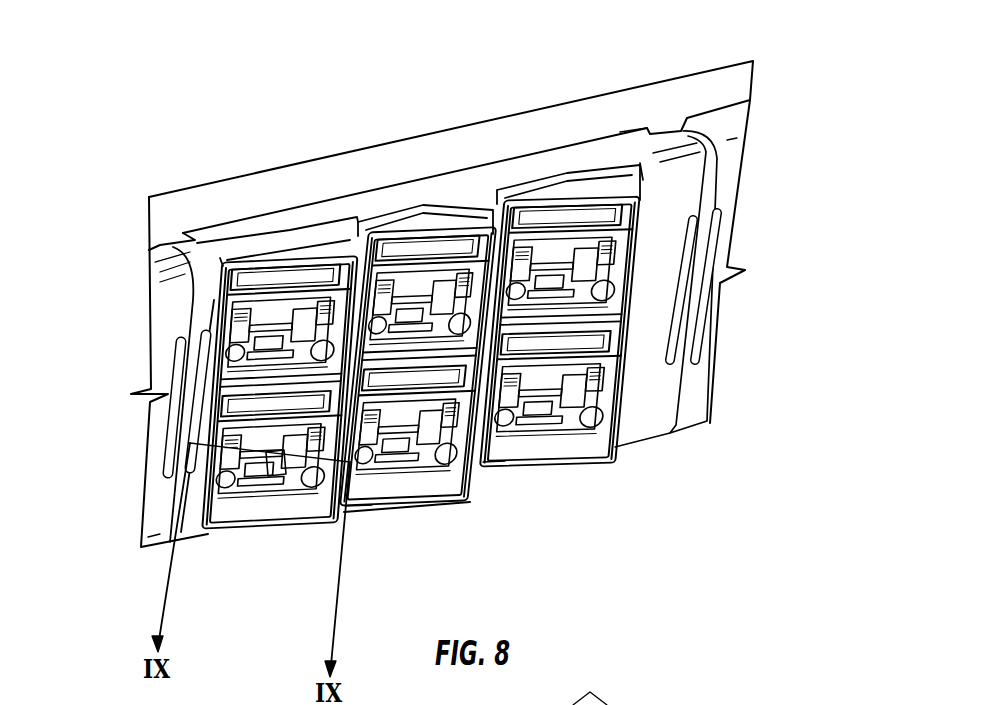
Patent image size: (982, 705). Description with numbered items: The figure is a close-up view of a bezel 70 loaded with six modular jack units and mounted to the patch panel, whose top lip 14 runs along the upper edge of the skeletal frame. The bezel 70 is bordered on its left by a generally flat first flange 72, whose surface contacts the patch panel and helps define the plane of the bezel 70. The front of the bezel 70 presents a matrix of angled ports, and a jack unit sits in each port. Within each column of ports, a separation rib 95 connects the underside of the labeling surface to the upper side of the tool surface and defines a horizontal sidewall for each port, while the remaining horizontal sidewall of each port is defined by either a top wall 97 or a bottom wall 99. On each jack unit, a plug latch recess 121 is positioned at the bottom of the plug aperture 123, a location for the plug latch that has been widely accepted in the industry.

The top lip 14 is at (360, 160).
The bezel 70 is at (477, 180).
The first flange 72 is at (633, 420).
The separation rib 95 is at (481, 468).
The top wall 97 is at (403, 200).
The bottom wall 99 is at (413, 503).
The plug latch recess 121 is at (268, 472).
The plug aperture 123 is at (273, 503).